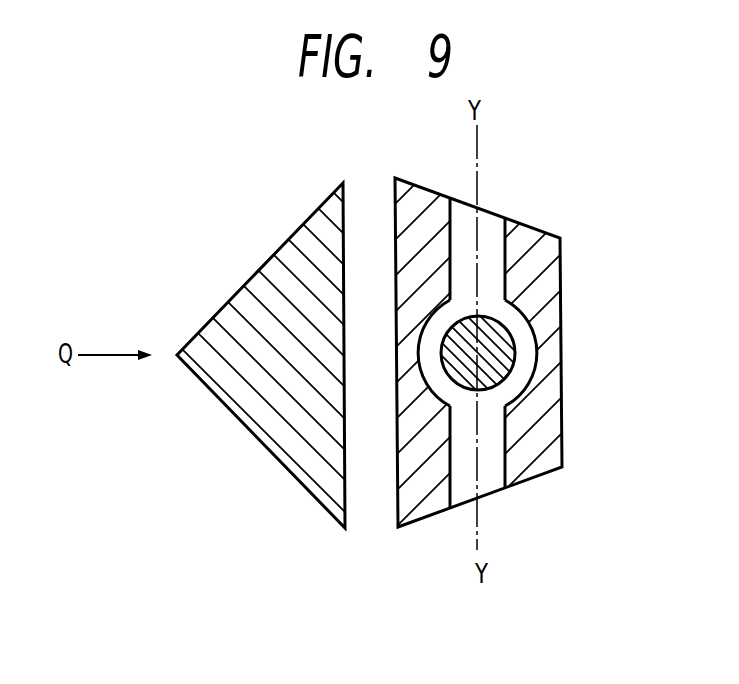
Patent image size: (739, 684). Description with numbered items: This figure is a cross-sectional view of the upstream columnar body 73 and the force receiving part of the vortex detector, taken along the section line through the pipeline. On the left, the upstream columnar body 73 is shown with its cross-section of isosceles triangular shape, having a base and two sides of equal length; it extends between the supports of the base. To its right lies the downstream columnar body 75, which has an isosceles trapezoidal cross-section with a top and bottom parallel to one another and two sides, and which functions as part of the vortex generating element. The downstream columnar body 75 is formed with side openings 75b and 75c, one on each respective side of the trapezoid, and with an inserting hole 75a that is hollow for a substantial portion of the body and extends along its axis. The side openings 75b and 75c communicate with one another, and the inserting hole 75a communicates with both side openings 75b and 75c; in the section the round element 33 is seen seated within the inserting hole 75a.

The upstream columnar body 73 is at (270, 450).
The downstream columnar body 75 is at (389, 346).
The inserting hole 75a is at (528, 362).
The side opening 75b is at (493, 480).
The side opening 75c is at (490, 223).
The shaft 33 is at (507, 342).